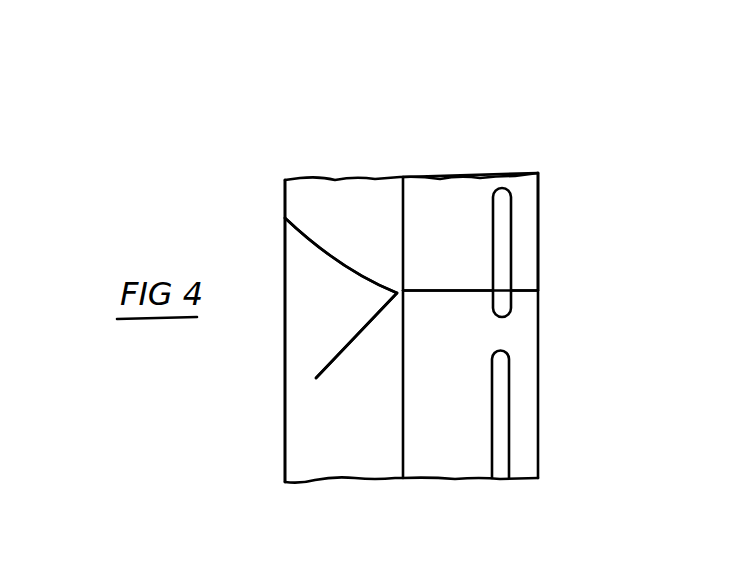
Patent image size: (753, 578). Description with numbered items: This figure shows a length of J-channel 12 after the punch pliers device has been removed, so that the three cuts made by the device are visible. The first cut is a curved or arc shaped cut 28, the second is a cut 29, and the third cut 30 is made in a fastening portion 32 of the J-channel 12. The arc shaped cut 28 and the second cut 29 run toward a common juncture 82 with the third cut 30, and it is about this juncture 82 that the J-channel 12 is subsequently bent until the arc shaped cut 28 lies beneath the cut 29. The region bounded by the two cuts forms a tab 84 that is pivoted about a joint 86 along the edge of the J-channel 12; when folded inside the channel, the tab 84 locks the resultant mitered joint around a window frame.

The J-channel 12 is at (377, 462).
The first curved or arc shaped cut 28 is at (316, 244).
The second cut 29 is at (313, 374).
The third cut 30 is at (462, 291).
The fastening portion 32 is at (463, 233).
The juncture 82 is at (397, 293).
The tab 84 is at (303, 330).
The joint 86 is at (287, 403).